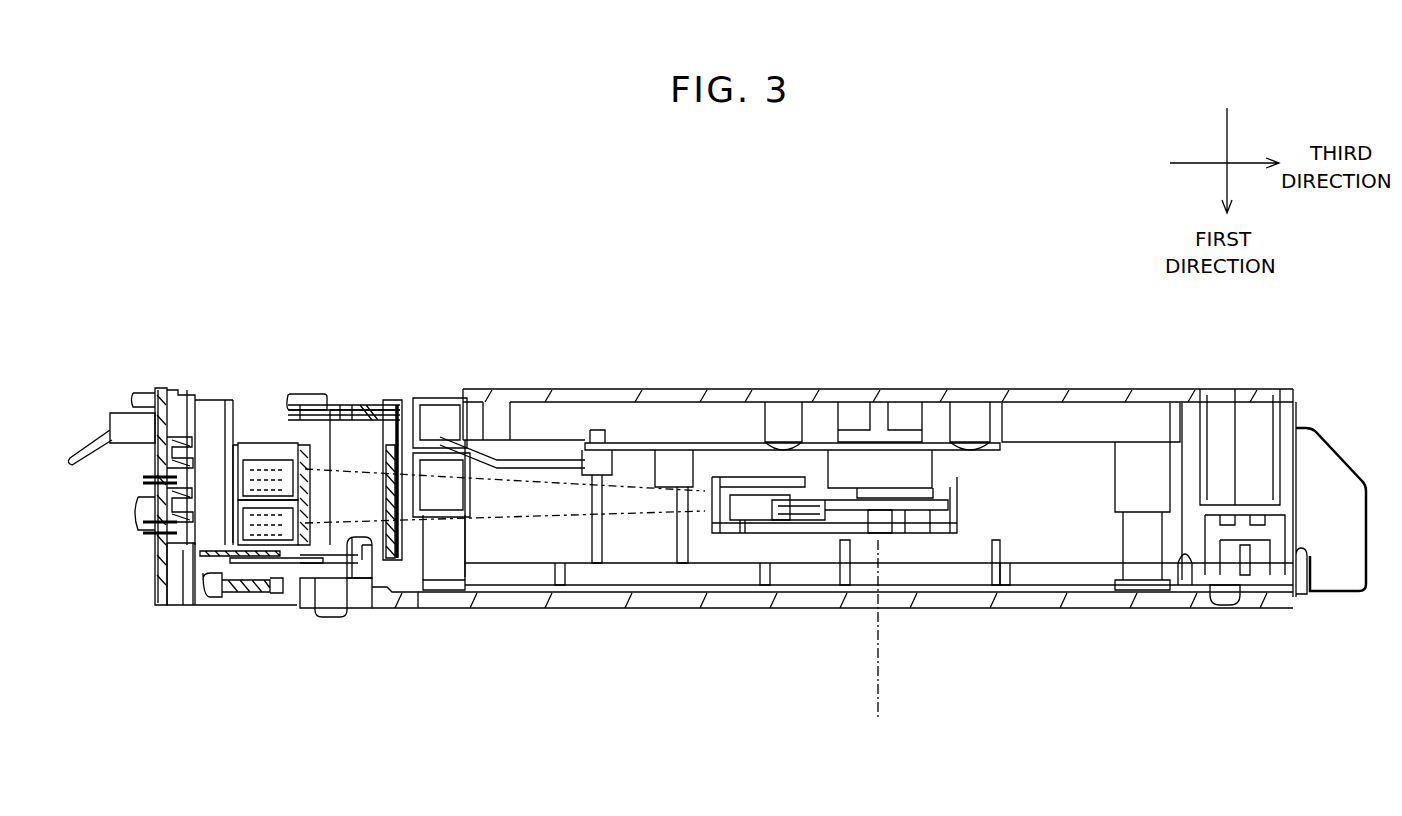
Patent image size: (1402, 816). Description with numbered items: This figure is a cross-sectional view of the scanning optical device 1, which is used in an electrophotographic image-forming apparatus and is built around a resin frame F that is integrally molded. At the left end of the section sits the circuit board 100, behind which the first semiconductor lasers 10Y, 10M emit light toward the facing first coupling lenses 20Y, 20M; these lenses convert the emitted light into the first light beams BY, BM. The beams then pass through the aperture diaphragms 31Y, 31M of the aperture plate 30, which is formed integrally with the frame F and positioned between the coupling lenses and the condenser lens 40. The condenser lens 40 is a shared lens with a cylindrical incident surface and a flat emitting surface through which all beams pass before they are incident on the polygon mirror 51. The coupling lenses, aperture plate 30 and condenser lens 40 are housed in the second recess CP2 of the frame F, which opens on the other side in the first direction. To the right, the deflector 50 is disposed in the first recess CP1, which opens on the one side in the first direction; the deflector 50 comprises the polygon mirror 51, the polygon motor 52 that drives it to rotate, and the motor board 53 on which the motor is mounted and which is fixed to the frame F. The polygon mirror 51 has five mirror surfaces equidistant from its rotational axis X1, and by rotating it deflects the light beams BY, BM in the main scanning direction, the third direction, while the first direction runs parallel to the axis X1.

The scanning optical device 1 is at (1029, 296).
The frame F is at (803, 378).
The first light beam BM is at (620, 490).
The first light beam BY is at (621, 520).
The first recess CP1 is at (1089, 544).
The second recess CP2 is at (294, 406).
The motor board 53 is at (730, 427).
The polygon motor 52 is at (935, 463).
The polygon mirror 51 is at (935, 500).
The deflector 50 is at (902, 556).
The rotational axis X1 is at (878, 714).
The condenser lens 40 is at (408, 442).
The aperture plate 30 is at (361, 477).
The aperture diaphragm 31M is at (341, 477).
The aperture diaphragm 31Y is at (358, 552).
The first coupling lens 20M is at (300, 455).
The first coupling lens 20Y is at (280, 548).
The first semiconductor laser 10M is at (185, 470).
The first semiconductor laser 10Y is at (187, 540).
The circuit board 100 is at (161, 375).